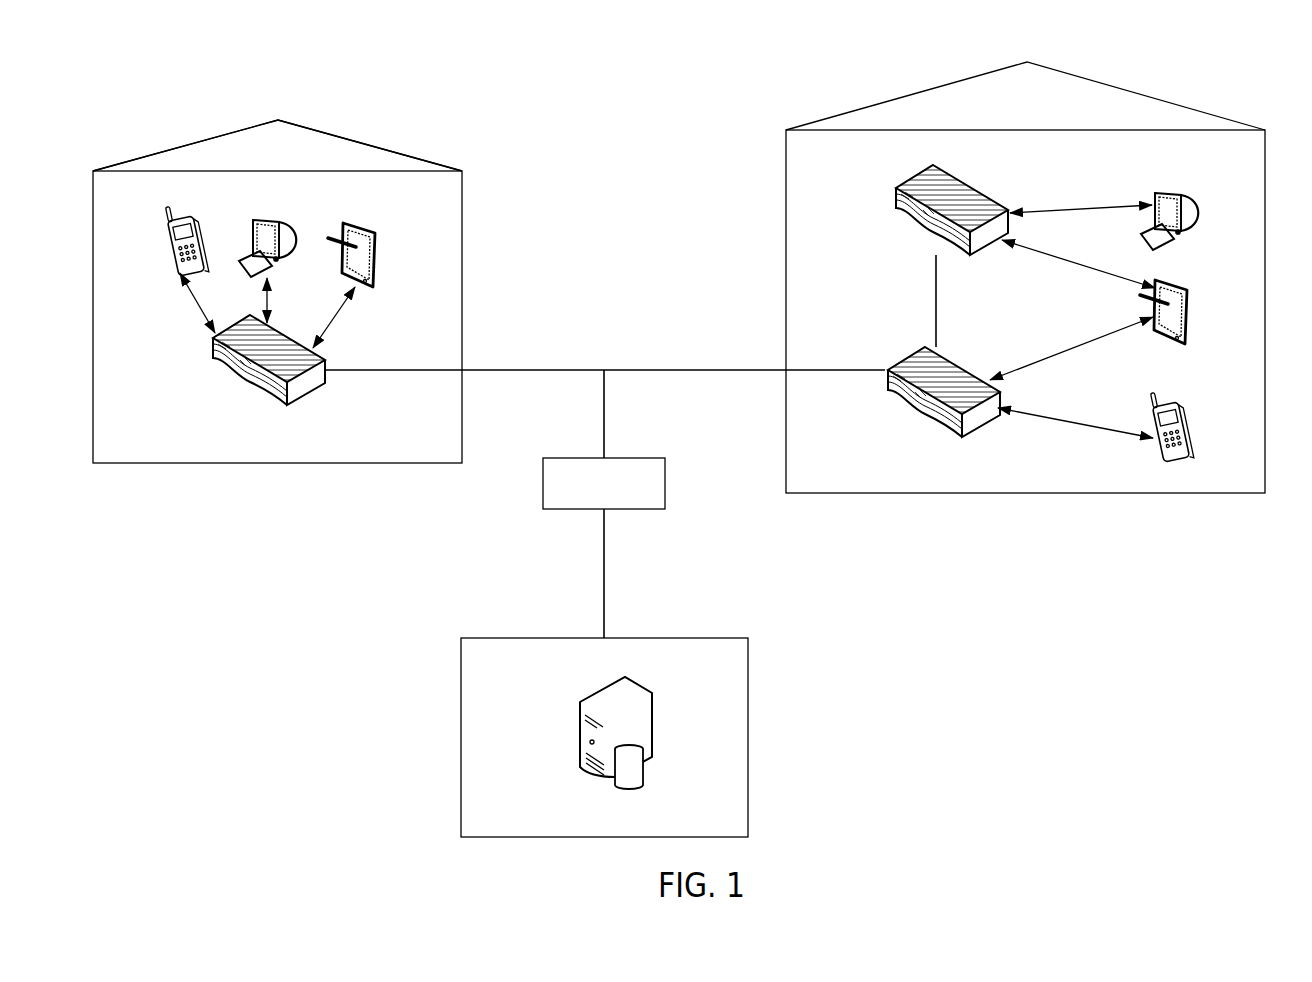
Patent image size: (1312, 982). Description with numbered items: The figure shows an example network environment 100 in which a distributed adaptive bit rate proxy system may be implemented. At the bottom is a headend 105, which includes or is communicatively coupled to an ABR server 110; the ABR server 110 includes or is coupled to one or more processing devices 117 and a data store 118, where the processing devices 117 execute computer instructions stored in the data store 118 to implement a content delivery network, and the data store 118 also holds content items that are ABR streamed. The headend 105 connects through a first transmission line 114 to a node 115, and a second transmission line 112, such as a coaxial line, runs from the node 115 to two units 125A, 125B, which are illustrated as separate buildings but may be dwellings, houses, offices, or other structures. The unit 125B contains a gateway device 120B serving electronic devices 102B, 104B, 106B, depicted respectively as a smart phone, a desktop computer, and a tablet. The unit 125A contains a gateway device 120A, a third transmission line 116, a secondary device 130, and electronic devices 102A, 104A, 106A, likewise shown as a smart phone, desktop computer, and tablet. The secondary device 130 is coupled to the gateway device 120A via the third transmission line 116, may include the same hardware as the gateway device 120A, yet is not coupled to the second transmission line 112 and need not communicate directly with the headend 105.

The network environment 100 is at (1226, 60).
The electronic device 102A is at (1173, 398).
The electronic device 102B is at (188, 222).
The electronic device 104A is at (1163, 192).
The electronic device 104B is at (268, 218).
The headend 105 is at (752, 730).
The electronic device 106A is at (1175, 280).
The electronic device 106B is at (370, 233).
The ABR server 110 is at (611, 735).
The second transmission line 112 is at (632, 370).
The first transmission line 114 is at (607, 570).
The node 115 is at (667, 483).
The third transmission line 116 is at (937, 313).
The processing devices 117 is at (637, 682).
The data store 118 is at (645, 780).
The gateway device 120A is at (957, 353).
The gateway device 120B is at (212, 345).
The unit 125A is at (1187, 104).
The unit 125B is at (465, 224).
The secondary device 130 is at (987, 187).